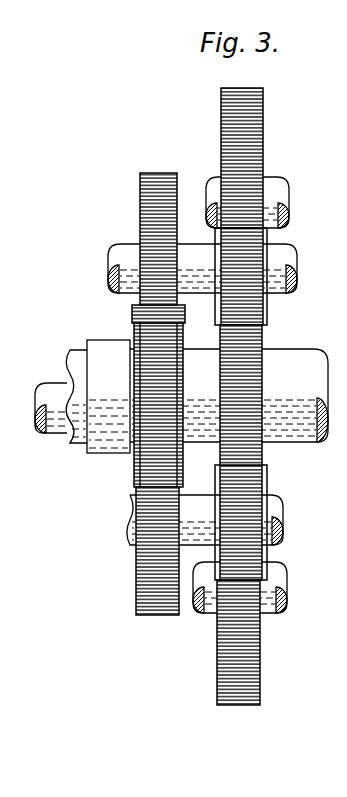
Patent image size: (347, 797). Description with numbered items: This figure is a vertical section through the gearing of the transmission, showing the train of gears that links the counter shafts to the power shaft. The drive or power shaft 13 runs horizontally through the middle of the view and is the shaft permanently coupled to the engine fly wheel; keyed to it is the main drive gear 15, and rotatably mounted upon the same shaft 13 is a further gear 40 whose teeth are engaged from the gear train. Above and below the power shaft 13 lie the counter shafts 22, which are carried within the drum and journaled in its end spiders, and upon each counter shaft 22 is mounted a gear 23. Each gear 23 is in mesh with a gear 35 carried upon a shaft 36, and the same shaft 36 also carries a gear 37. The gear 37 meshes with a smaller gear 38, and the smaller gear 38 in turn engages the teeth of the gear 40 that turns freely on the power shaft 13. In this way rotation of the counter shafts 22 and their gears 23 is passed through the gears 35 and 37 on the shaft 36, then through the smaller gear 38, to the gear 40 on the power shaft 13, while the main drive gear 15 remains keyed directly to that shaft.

The power shaft 13 is at (284, 443).
The main drive gear 15 is at (263, 343).
The counter shaft 22 is at (293, 171).
The gear 23 is at (264, 108).
The gear 35 is at (268, 233).
The shaft 36 is at (108, 280).
The gear 37 is at (140, 217).
The smaller gear 38 is at (157, 395).
The gear 40 is at (132, 313).